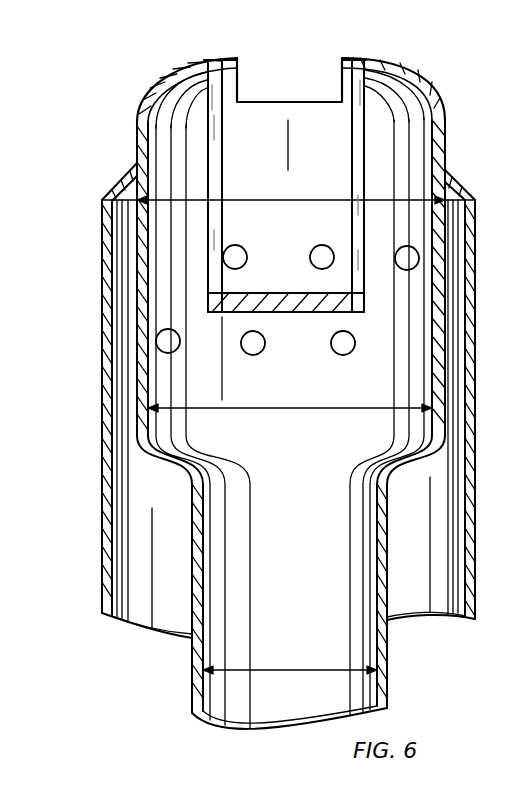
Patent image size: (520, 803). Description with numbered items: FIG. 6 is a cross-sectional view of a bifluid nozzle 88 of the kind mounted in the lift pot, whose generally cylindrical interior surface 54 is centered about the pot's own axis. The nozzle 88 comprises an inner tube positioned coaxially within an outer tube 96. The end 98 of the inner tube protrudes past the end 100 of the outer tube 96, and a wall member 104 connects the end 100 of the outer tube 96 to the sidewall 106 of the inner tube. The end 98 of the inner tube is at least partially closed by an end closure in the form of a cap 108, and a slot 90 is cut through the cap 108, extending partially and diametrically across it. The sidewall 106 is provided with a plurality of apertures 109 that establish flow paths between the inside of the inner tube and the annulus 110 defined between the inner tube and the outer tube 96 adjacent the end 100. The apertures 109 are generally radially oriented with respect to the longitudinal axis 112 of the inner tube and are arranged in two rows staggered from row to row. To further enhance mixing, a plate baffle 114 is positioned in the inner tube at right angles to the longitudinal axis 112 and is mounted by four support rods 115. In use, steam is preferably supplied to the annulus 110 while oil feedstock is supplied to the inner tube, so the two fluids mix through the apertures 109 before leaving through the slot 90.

The interior surface 54 is at (138, 288).
The nozzle 88 is at (137, 122).
The slot 90 is at (285, 102).
The outer tube 96 is at (102, 518).
The end of the inner tube 98 is at (181, 73).
The end of the outer tube 100 is at (102, 202).
The wall member 104 is at (120, 183).
The sidewall 106 is at (137, 147).
The cap 108 is at (387, 70).
The apertures 109 is at (310, 248).
The annulus 110 is at (123, 428).
The longitudinal axis 112 is at (290, 147).
The plate baffle 114 is at (290, 292).
The support rods 115 is at (352, 183).